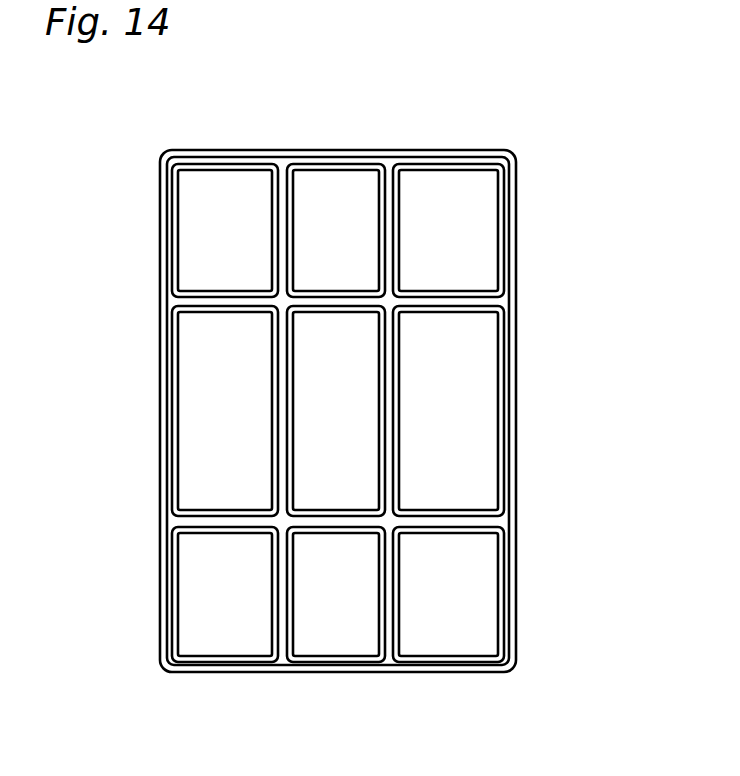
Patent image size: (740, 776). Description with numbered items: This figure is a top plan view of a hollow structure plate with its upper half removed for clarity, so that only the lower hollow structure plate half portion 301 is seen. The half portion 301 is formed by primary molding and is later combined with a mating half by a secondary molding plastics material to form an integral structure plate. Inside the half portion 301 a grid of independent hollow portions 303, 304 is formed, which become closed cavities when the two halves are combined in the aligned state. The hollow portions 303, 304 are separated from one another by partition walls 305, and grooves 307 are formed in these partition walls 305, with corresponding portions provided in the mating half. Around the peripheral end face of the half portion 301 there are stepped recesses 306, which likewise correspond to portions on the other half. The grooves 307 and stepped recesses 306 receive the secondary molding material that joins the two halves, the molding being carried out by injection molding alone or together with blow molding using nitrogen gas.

The hollow structure plate half portion 301 is at (530, 192).
The hollow portion 303 is at (228, 193).
The hollow portion 304 is at (457, 383).
The partition wall 305 is at (390, 486).
The stepped recess 306 is at (517, 590).
The groove 307 is at (285, 663).